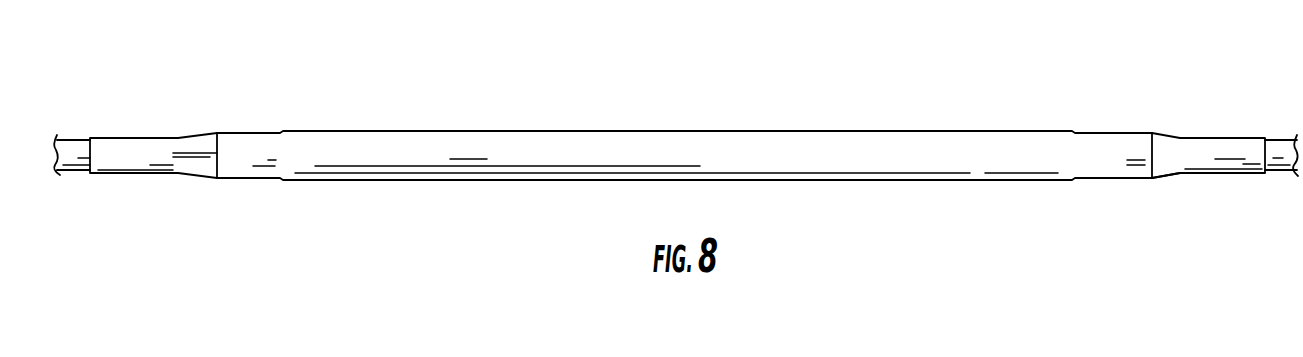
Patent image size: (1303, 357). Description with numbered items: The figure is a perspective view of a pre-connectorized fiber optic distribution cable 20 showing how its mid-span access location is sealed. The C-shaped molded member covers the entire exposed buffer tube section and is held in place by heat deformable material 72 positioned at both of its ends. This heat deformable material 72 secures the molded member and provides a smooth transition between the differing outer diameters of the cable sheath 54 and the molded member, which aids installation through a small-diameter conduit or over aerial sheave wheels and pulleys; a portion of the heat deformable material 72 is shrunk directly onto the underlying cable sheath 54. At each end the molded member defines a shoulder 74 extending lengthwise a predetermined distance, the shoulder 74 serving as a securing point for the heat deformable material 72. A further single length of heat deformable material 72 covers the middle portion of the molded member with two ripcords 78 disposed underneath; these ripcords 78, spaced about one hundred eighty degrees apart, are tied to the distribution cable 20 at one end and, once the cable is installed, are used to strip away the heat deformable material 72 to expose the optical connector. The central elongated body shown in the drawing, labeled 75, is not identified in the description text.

The distribution cable 20 is at (78, 138).
The heat deformable material 72 is at (148, 137).
The elongated body 75 is at (543, 131).
The cable sheath 54 is at (72, 160).
The ripcords 78 is at (202, 157).
The shoulder 74 is at (1174, 182).